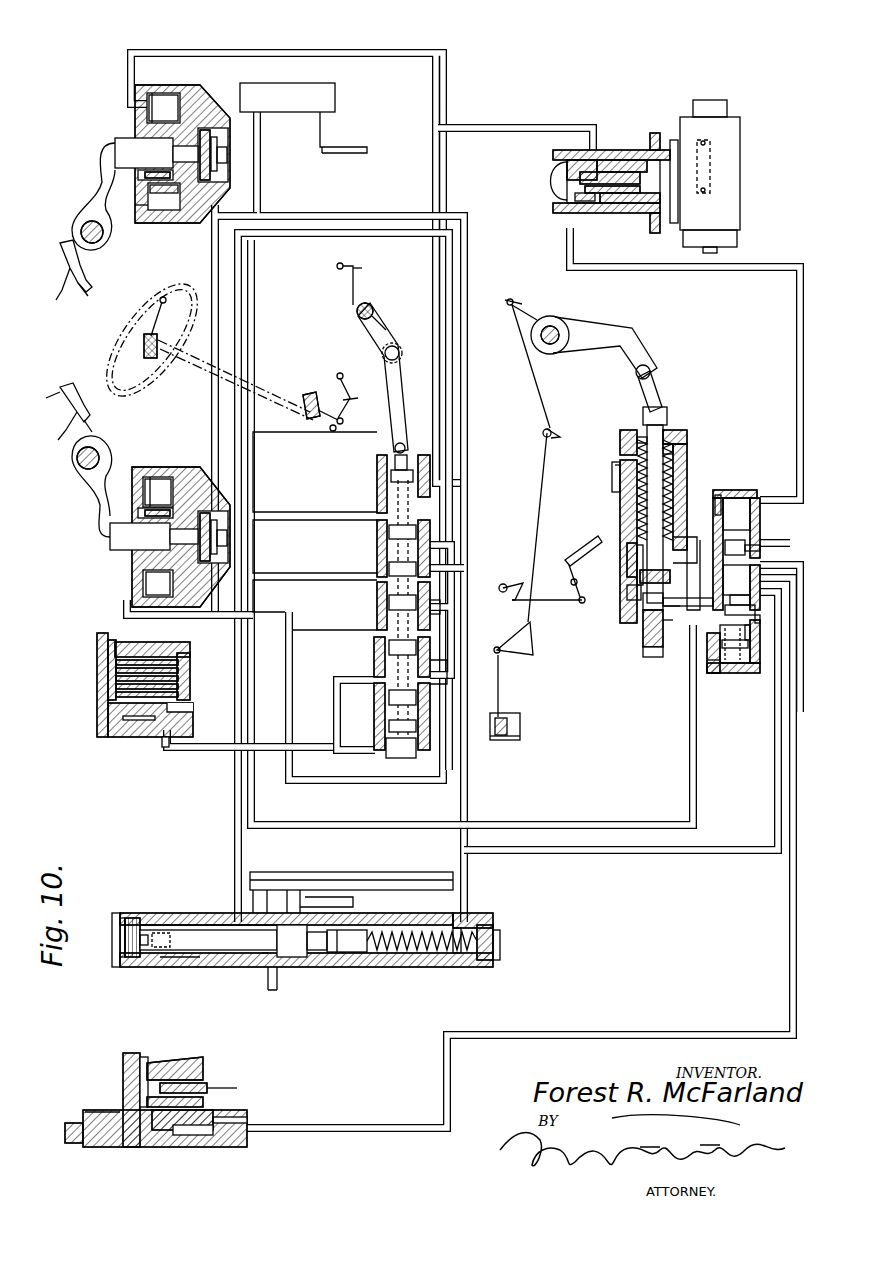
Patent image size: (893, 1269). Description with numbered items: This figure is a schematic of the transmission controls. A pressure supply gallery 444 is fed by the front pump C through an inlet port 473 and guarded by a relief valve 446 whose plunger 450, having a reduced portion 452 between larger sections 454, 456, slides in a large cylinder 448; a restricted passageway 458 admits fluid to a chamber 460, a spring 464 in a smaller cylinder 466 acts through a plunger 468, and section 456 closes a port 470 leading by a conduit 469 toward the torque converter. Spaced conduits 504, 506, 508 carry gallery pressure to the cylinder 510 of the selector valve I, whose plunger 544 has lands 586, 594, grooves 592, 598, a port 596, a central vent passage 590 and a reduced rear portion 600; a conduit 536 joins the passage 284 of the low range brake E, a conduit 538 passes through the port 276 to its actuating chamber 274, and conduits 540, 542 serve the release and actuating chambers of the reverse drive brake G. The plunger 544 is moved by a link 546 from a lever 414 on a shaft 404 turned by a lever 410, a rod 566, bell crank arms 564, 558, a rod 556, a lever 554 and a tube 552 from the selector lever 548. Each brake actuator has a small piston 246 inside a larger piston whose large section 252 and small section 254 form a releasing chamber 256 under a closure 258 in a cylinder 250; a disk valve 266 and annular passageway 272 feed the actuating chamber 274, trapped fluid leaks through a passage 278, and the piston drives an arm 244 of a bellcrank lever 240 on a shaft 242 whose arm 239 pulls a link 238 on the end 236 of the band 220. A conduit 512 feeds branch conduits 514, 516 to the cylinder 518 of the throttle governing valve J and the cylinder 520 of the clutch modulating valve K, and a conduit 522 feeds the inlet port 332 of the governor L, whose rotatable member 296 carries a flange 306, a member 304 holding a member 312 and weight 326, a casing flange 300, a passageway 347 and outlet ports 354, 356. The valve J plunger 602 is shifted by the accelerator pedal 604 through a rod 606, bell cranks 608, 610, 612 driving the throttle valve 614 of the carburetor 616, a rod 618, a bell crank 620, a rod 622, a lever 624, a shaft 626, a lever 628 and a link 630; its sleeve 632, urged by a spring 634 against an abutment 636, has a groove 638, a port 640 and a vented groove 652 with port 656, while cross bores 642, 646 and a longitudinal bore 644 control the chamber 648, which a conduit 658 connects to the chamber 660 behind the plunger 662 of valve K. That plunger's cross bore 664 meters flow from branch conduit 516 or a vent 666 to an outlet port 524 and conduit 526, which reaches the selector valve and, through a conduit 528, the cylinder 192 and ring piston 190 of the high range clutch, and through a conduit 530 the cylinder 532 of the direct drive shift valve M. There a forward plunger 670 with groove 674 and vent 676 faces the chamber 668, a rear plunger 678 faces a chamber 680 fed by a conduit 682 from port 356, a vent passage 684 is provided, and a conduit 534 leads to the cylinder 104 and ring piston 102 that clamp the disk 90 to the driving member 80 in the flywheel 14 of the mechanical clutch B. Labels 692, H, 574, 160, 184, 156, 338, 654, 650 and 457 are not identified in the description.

The conduit 540 is at (128, 68).
The conduit 542 is at (260, 206).
The conduit 276 is at (220, 215).
The conduit 444 is at (242, 305).
The conduit 512 is at (382, 822).
The conduit 522 is at (540, 125).
The conduit 534 is at (800, 575).
The conduit 530 is at (790, 682).
The conduit 526 is at (736, 855).
The conduit 668 is at (798, 546).
The conduit 536 is at (238, 646).
The conduit 528 is at (168, 748).
The passage 596 is at (438, 610).
The conduit 538 is at (217, 480).
The passage 692 is at (432, 603).
The port 508 is at (320, 511).
The port 506 is at (320, 572).
The port 504 is at (322, 629).
The valve housing 252 is at (188, 90).
The piston 246 is at (120, 160).
The chamber 256 is at (165, 95).
The spring seat 284 is at (152, 93).
The spring 250 is at (145, 110).
The valve element 274 is at (210, 128).
The valve seat 266 is at (220, 140).
The port 258 is at (140, 210).
The washer 278 is at (153, 200).
The chamber 254 is at (158, 582).
The valve G is at (107, 131).
The valve E is at (112, 590).
The lever 240 is at (90, 195).
The roller 242 is at (70, 225).
The roller 244 is at (80, 480).
The pedal 220 is at (58, 381).
The pivot 239 is at (81, 302).
The pedal 236 is at (46, 390).
The pedal arm 238 is at (88, 428).
The cylinder H is at (345, 100).
The steering wheel 548 is at (158, 299).
The steering column 574 is at (170, 368).
The collar 552 is at (296, 398).
The link 554 is at (332, 410).
The link 564 is at (339, 378).
The pin 556 is at (336, 425).
The link 558 is at (355, 410).
The pivot 404 is at (371, 305).
The pin 410 is at (337, 266).
The link 566 is at (363, 270).
The arm 414 is at (392, 335).
The lever 546 is at (403, 362).
The valve stem 600 is at (393, 452).
The piston 544 is at (390, 464).
The valve I is at (368, 497).
The land 594 is at (380, 528).
The land 598 is at (385, 630).
The groove 510 is at (386, 582).
The land 586 is at (376, 672).
The land 590 is at (384, 724).
The passage 592 is at (438, 663).
The clutch housing 160 is at (97, 670).
The clutch plates 184 is at (186, 666).
The clutch drum 156 is at (194, 671).
The piston 190 is at (128, 730).
The chamber 192 is at (148, 722).
The valve L is at (641, 140).
The valve body 332 is at (575, 150).
The sleeve 338 is at (605, 150).
The valve 272 is at (610, 138).
The plunger 354 is at (603, 196).
The valve body 300 is at (626, 212).
The spring 356 is at (585, 207).
The cap 296 is at (550, 186).
The plate 306 is at (673, 138).
The governor housing 304 is at (742, 172).
The shaft 312 is at (729, 106).
The base 326 is at (739, 233).
The weight 347 is at (713, 170).
The conduit 682 is at (567, 236).
The pin 624 is at (518, 295).
The hub 626 is at (548, 316).
The arm 628 is at (598, 343).
The pin 630 is at (651, 373).
The valve stem 602 is at (664, 412).
The valve J is at (650, 705).
The spring 640 is at (655, 490).
The seat 656 is at (619, 440).
The seat 654 is at (682, 455).
The sleeve 632 is at (612, 476).
The sleeve 634 is at (608, 465).
The spring 638 is at (623, 541).
The land 650 is at (618, 557).
The land 642 is at (655, 565).
The port 652 is at (627, 605).
The passage 518 is at (684, 502).
The passage 514 is at (688, 540).
The valve 648 is at (640, 612).
The chamber 636 is at (627, 617).
The plug 644 is at (641, 700).
The port 646 is at (665, 625).
The port 658 is at (680, 612).
The passage 674 is at (688, 582).
The link 622 is at (527, 382).
The pivot 620 is at (543, 430).
The link 618 is at (538, 530).
The bell crank 612 is at (497, 645).
The link 610 is at (505, 583).
The rod 608 is at (572, 598).
The lever 604 is at (582, 550).
The link 606 is at (585, 592).
The rod 614 is at (499, 672).
The throttle 616 is at (505, 742).
The valve M is at (743, 480).
The seat 678 is at (722, 496).
The plunger 680 is at (745, 500).
The spring 684 is at (762, 545).
The port 676 is at (773, 540).
The piston 670 is at (735, 577).
The passage 532 is at (753, 591).
The valve 660 is at (761, 601).
The valve K is at (727, 683).
The passage 516 is at (704, 674).
The passage 520 is at (728, 674).
The valve 664 is at (742, 674).
The passage 524 is at (752, 674).
The port 666 is at (763, 641).
The port 662 is at (776, 636).
The servo C is at (480, 875).
The end cap 460 is at (118, 912).
The seal 458 is at (135, 918).
The piston rod 452 is at (176, 930).
The bore 448 is at (199, 913).
The seal 454 is at (162, 958).
The cylinder 446 is at (196, 967).
The piston 450 is at (302, 952).
The port 470 is at (268, 975).
The port 469 is at (282, 970).
The piston 456 is at (320, 955).
The spring seat 468 is at (356, 955).
The spring 466 is at (396, 955).
The end cap 464 is at (482, 957).
The bar 473 is at (300, 871).
The bracket 457 is at (313, 894).
The brake B is at (75, 1117).
The housing 14 is at (110, 1114).
The cone 80 is at (168, 1060).
The plate 90 is at (207, 1085).
The piston 102 is at (162, 1130).
The chamber 104 is at (192, 1136).